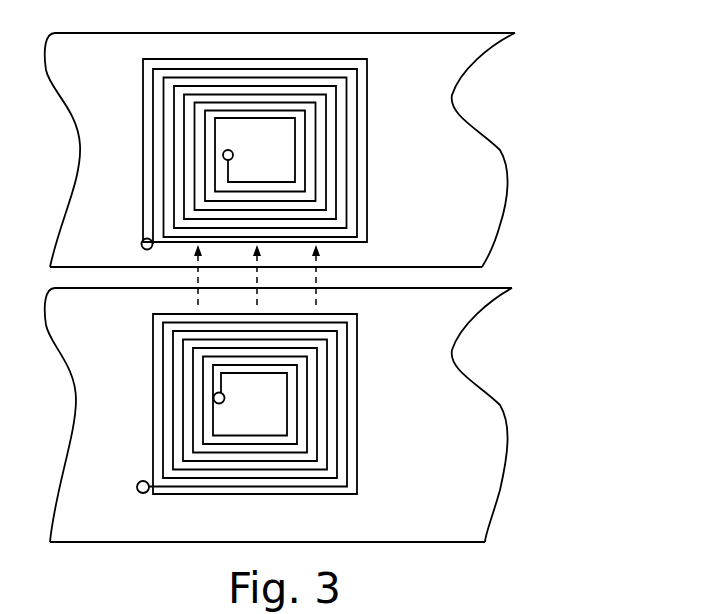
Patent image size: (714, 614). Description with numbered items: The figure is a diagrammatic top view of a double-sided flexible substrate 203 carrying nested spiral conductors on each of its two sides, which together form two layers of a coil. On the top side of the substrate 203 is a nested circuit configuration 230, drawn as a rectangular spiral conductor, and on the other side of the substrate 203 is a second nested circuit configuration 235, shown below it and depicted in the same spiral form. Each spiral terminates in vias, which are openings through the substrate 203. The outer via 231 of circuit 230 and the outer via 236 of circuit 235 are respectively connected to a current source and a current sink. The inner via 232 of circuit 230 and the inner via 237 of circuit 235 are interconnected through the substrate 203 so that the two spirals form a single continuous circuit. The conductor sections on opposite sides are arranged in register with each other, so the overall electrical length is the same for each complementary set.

The substrate 203 is at (457, 162).
The nested circuit configuration 230 is at (318, 59).
The via 231 is at (141, 246).
The via 232 is at (258, 150).
The second nested circuit configuration 235 is at (350, 479).
The via 236 is at (137, 487).
The via 237 is at (221, 404).